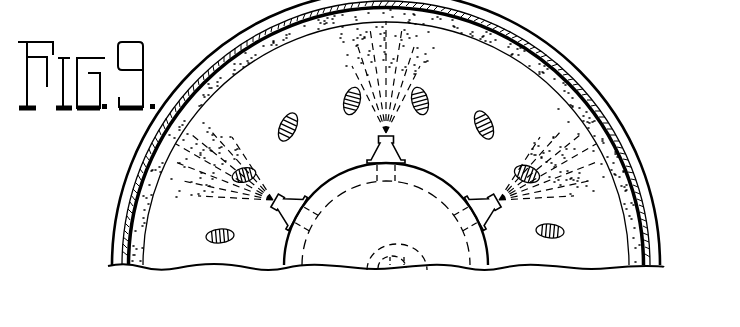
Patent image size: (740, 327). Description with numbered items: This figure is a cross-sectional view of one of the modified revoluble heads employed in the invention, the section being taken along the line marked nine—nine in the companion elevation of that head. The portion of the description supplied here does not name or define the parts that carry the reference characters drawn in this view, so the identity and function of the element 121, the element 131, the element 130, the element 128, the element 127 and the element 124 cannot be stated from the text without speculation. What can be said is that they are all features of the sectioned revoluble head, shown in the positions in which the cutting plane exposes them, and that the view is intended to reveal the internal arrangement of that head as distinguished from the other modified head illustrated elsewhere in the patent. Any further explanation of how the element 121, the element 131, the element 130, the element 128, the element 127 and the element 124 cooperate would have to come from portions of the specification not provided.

The dome-shaped housing 121 is at (646, 159).
The insulating layer 131 is at (596, 87).
The nozzles 130 is at (398, 144).
The inner dome 128 is at (286, 246).
The central opening 127 is at (428, 271).
The articles being treated 124 is at (284, 114).